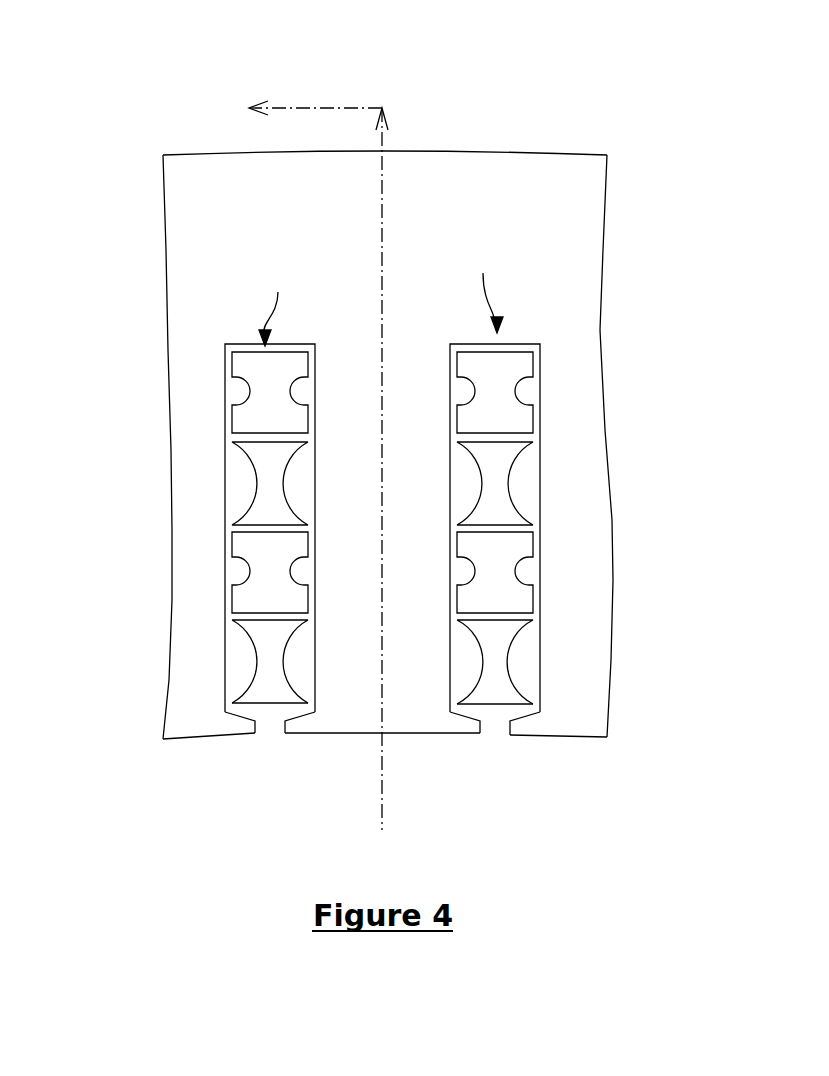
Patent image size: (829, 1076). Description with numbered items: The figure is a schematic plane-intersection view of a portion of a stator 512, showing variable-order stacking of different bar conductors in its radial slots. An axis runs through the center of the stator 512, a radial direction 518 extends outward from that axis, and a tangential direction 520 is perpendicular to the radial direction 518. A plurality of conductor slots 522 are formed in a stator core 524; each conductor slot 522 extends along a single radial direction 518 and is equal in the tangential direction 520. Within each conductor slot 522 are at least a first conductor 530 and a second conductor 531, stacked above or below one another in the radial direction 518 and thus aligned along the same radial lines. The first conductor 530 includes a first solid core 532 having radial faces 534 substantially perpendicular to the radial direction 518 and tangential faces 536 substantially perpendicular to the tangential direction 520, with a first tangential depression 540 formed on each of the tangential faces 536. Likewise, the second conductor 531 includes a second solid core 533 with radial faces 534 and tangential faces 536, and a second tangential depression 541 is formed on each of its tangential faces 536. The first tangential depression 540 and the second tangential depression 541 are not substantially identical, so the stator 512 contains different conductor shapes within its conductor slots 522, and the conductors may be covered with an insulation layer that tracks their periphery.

The stator 512 is at (100, 116).
The radial direction 518 is at (383, 802).
The tangential direction 520 is at (313, 108).
The conductor slot 522 is at (228, 387).
The stator core 524 is at (553, 257).
The first conductor 530 is at (265, 663).
The second conductor 531 is at (500, 567).
The first solid core 532 is at (268, 693).
The second solid core 533 is at (488, 368).
The radial faces 534 is at (378, 293).
The tangential faces 536 is at (218, 468).
The first tangential depression 540 is at (292, 465).
The second tangential depression 541 is at (292, 572).